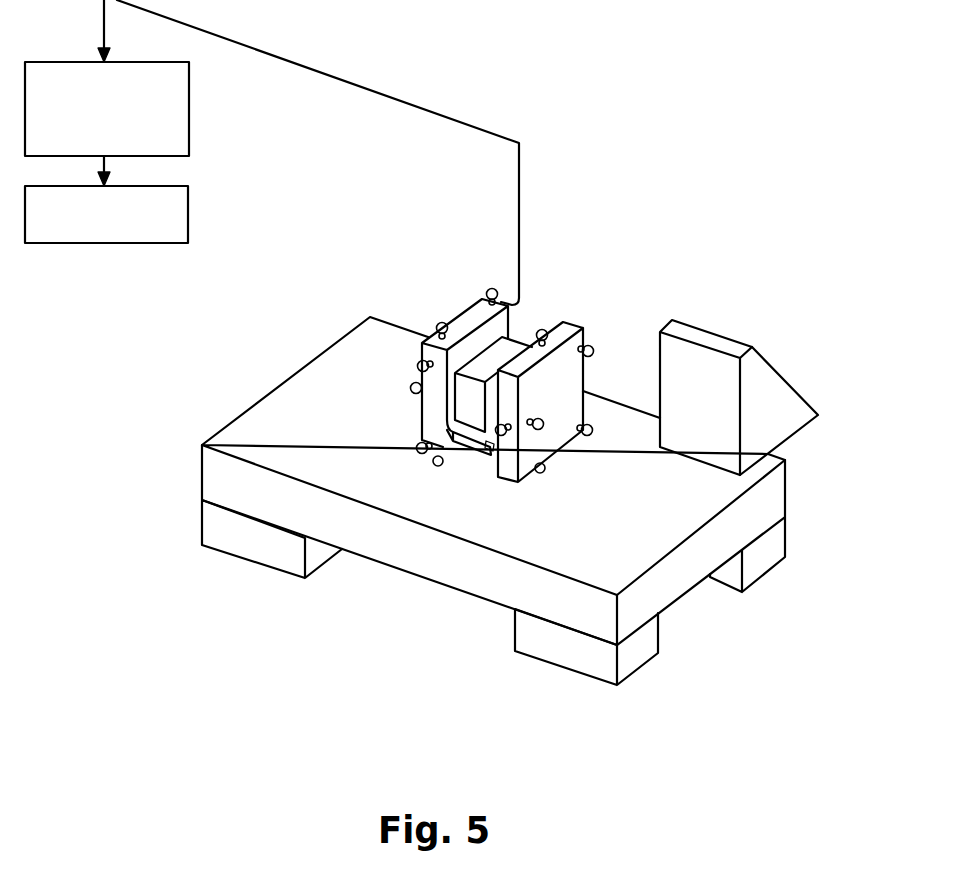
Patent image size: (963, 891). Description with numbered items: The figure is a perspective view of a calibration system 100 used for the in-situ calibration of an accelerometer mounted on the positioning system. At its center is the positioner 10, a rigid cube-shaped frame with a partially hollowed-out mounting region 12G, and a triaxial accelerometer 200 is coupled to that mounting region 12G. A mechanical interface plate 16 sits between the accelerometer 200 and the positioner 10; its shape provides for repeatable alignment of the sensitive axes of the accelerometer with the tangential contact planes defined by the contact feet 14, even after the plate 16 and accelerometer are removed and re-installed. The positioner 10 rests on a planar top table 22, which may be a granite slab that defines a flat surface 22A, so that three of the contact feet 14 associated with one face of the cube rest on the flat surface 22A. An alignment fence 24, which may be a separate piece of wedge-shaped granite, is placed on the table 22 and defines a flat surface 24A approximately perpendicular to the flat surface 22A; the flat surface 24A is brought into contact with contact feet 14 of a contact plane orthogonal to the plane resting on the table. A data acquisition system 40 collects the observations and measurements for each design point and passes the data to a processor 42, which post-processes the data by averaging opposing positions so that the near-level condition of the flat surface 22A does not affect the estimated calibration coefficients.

The positioner 10 is at (469, 486).
The mounting region 12G is at (490, 443).
The contact feet 14 is at (589, 424).
The mechanical interface plate 16 is at (466, 411).
The planar top table 22 is at (489, 502).
The flat surface 22A is at (330, 383).
The alignment fence 24 is at (767, 436).
The flat surface 24A is at (713, 427).
The data acquisition system 40 is at (191, 108).
The processor 42 is at (190, 213).
The calibration system 100 is at (777, 190).
The triaxial accelerometer 200 is at (378, 566).